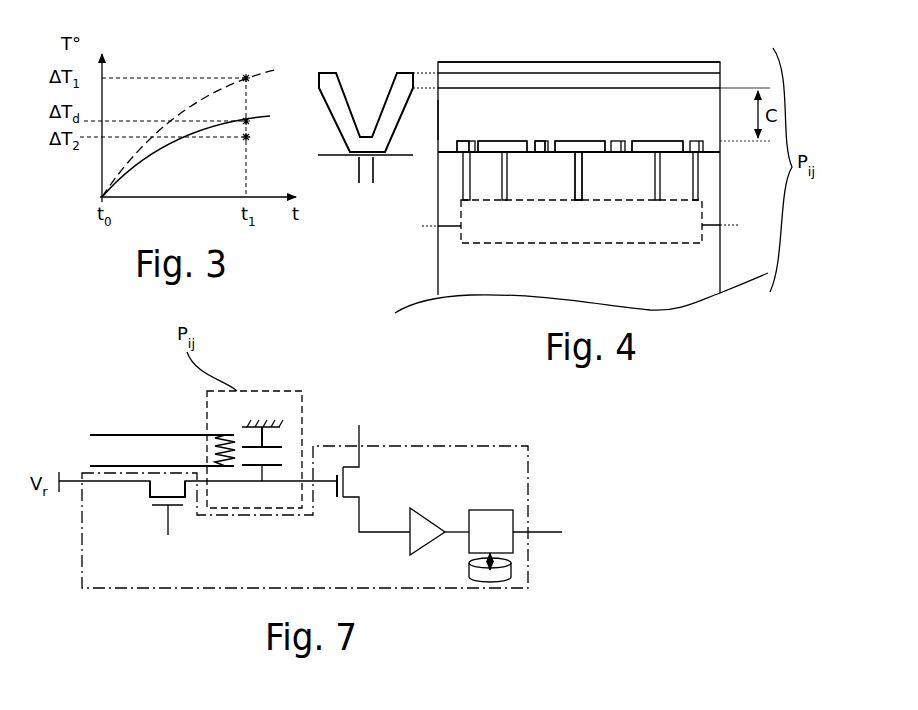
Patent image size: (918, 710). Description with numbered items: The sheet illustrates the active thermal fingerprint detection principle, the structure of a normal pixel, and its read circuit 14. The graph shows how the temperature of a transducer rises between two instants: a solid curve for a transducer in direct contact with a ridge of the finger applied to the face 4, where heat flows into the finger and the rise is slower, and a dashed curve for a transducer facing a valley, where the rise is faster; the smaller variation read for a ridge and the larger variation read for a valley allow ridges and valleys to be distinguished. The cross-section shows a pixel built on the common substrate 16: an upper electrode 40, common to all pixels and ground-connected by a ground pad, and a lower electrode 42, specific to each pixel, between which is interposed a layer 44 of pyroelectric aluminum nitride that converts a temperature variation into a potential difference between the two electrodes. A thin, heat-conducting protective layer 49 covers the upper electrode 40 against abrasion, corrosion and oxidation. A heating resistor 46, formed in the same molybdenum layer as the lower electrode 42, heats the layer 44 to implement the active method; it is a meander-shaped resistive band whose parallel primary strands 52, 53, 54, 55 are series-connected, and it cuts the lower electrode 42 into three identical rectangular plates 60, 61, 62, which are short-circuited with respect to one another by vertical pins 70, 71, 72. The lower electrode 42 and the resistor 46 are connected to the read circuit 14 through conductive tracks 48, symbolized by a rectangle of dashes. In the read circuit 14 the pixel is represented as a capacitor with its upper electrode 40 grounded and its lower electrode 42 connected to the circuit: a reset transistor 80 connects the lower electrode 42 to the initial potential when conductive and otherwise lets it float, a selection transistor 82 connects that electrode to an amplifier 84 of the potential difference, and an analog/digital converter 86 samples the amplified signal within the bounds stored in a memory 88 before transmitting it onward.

In FIG. 4, the face 4 is at (562, 62).
In FIG. 7, the read circuit 14 is at (536, 476).
In FIG. 4, the substrate 16 is at (657, 298).
In FIG. 4, the upper electrode 40 is at (712, 80).
In FIG. 7, the upper electrode 40 is at (272, 445).
In FIG. 4, the lower electrode 42 is at (501, 140).
In FIG. 7, the lower electrode 42 is at (268, 468).
In FIG. 4, the layer of pyroelectric material 44 is at (455, 115).
In FIG. 4, the heating resistor 46 is at (320, 118).
In FIG. 7, the heating resistor 46 is at (225, 435).
In FIG. 4, the conductive tracks 48 is at (458, 214).
In FIG. 4, the protective layer 49 is at (445, 68).
In FIG. 4, the primary strand 52 is at (458, 145).
In FIG. 4, the primary strand 53 is at (543, 158).
In FIG. 4, the primary strand 54 is at (577, 192).
In FIG. 4, the primary strand 55 is at (695, 158).
In FIG. 4, the rectangular plate 60 is at (480, 143).
In FIG. 4, the rectangular plate 61 is at (556, 143).
In FIG. 4, the rectangular plate 62 is at (633, 143).
In FIG. 4, the vertical pin 70 is at (498, 202).
In FIG. 4, the vertical pin 71 is at (571, 202).
In FIG. 4, the vertical pin 72 is at (651, 202).
In FIG. 7, the reset transistor 80 is at (156, 518).
In FIG. 7, the selection transistor 82 is at (369, 483).
In FIG. 7, the amplifier 84 is at (425, 525).
In FIG. 7, the analog/digital converter 86 is at (500, 535).
In FIG. 7, the memory 88 is at (503, 572).